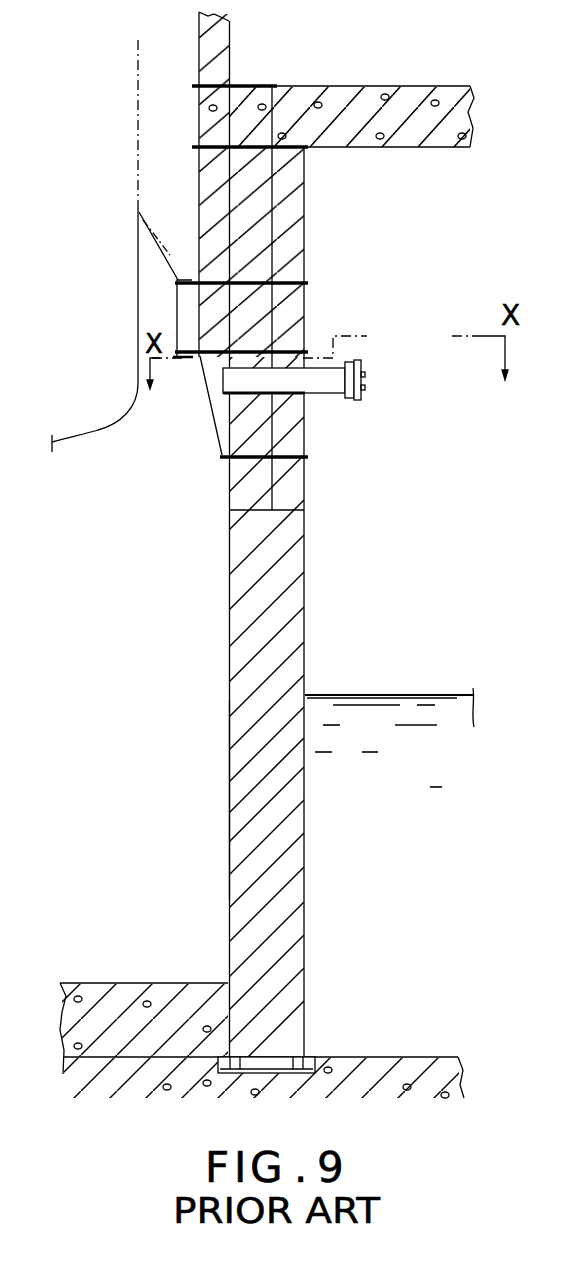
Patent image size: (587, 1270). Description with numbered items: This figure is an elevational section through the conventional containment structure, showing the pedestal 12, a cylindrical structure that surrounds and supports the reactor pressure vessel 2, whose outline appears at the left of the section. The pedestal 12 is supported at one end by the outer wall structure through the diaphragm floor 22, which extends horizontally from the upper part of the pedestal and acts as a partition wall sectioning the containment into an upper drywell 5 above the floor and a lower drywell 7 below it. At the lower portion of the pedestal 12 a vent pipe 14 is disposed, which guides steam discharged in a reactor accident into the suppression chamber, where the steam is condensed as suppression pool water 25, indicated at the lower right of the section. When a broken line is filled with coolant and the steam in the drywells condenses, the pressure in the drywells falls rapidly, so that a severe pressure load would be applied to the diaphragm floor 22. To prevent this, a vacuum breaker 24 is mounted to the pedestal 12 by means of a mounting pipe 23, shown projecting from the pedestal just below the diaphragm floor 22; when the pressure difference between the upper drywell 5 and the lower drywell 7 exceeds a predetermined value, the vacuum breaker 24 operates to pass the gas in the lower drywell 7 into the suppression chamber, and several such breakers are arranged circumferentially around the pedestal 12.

The reactor pressure vessel 2 is at (93, 433).
The upper drywell 5 is at (362, 38).
The lower drywell 7 is at (123, 652).
The pedestal 12 is at (305, 613).
The vent pipe 14 is at (229, 801).
The diaphragm floor 22 is at (435, 88).
The mounting pipe 23 is at (222, 380).
The vacuum breaker 24 is at (363, 370).
The suppression pool water 25 is at (423, 887).